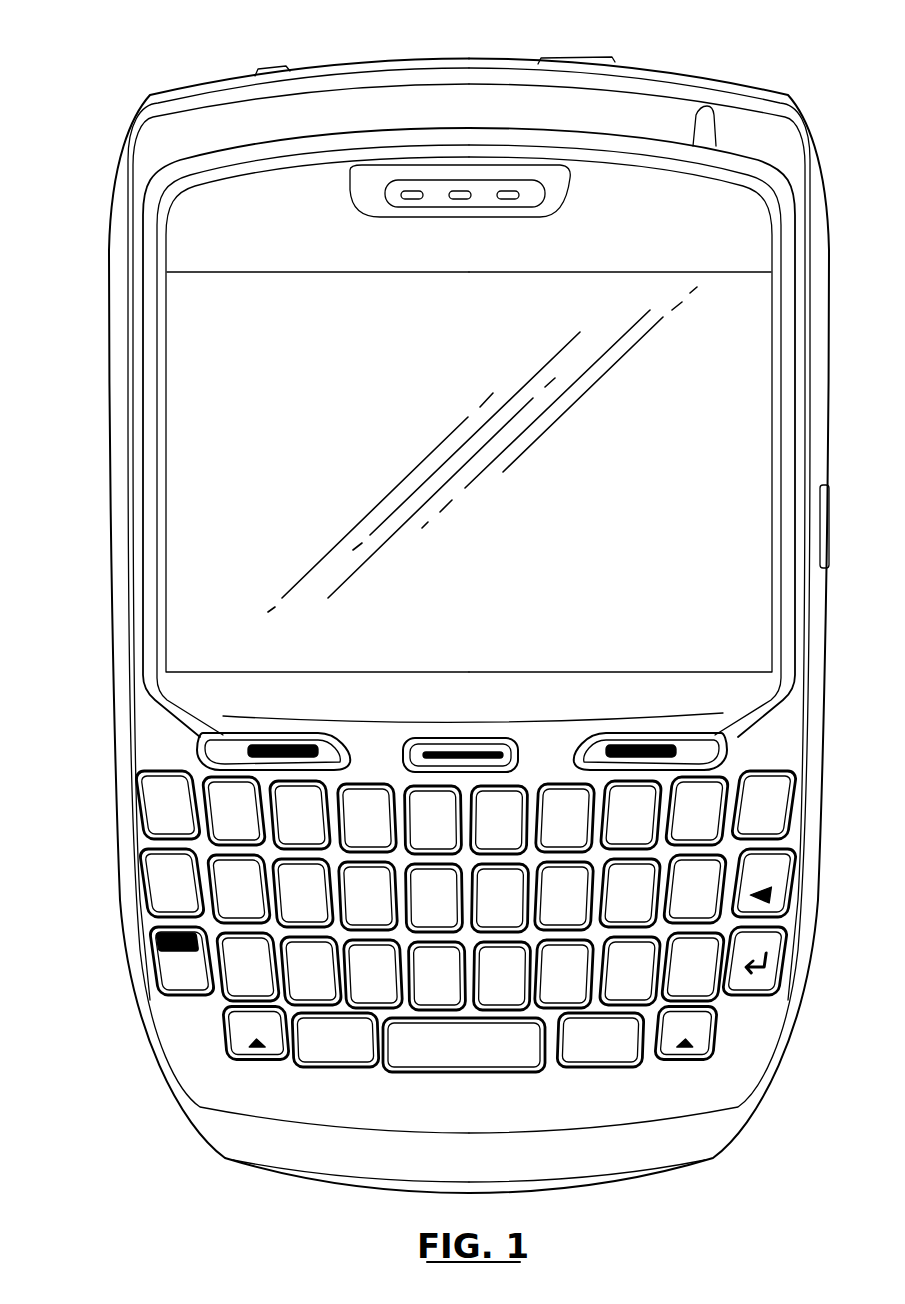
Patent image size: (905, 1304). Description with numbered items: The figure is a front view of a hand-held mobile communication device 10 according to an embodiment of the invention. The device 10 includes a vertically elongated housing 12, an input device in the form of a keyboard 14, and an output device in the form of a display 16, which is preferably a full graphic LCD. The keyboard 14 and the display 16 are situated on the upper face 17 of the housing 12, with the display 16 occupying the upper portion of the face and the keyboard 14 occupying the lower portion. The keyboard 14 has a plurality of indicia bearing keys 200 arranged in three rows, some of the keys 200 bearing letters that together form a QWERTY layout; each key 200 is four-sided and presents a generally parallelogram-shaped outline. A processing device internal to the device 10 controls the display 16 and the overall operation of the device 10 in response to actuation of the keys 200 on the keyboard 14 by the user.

The hand-held mobile communication device 10 is at (86, 409).
The housing 12 is at (686, 80).
The keyboard 14 is at (94, 958).
The display 16 is at (747, 445).
The upper face 17 is at (212, 1074).
The indicia bearing keys 200 is at (147, 818).